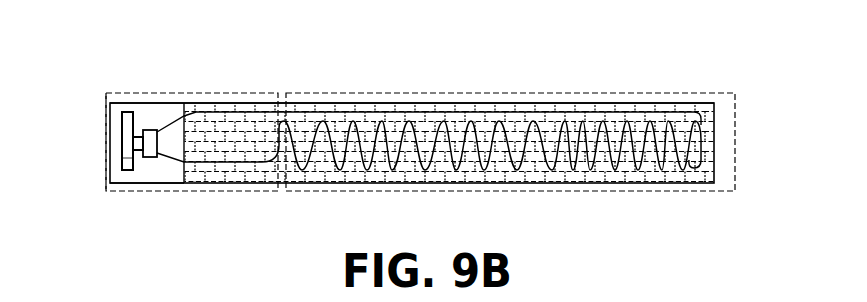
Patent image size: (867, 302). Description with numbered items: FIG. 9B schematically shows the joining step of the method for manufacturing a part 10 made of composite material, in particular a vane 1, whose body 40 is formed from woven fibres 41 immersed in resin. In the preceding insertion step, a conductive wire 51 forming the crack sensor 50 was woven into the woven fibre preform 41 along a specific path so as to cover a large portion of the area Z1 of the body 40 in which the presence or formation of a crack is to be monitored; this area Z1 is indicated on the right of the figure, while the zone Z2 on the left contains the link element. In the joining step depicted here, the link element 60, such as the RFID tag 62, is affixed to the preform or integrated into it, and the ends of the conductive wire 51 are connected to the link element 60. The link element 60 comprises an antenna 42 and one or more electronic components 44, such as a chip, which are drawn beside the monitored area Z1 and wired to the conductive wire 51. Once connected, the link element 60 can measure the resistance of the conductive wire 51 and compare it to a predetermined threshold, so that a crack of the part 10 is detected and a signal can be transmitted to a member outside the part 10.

The vane 1 is at (420, 107).
The part 10 is at (98, 140).
The body 40 is at (714, 167).
The woven fibre preform 41 is at (702, 153).
The antenna 42 is at (126, 113).
The electronic component 44 is at (148, 158).
The crack sensor 50 is at (321, 102).
The conductive wire 51 is at (534, 117).
The link element 60 is at (129, 157).
The RFID tag 62 is at (114, 172).
The area to be monitored Z1 is at (722, 93).
The connection zone Z2 is at (105, 97).